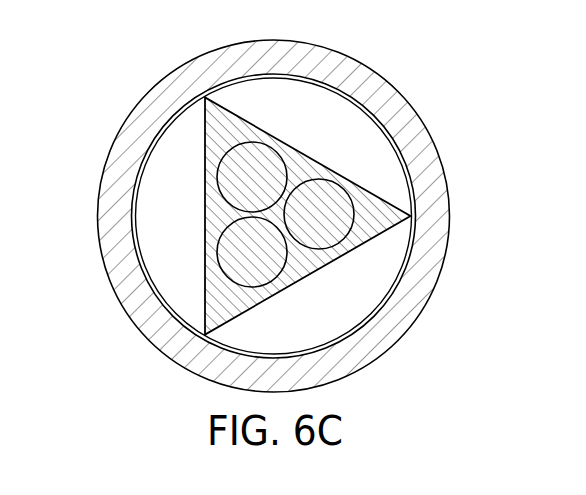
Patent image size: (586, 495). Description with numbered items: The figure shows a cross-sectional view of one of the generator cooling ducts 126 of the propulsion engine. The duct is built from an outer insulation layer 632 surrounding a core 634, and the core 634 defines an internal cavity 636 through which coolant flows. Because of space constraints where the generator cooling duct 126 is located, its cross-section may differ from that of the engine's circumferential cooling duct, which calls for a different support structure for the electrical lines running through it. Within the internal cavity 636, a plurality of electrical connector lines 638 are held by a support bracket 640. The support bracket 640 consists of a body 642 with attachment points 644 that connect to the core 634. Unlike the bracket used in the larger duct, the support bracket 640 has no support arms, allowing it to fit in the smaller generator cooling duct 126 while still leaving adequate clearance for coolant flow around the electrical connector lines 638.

The generator cooling duct 126 is at (245, 207).
The insulation layer 632 is at (381, 90).
The core 634 is at (402, 148).
The internal cavity 636 is at (234, 216).
The electrical connector lines 638 is at (322, 195).
The support bracket 640 is at (306, 262).
The body 642 is at (218, 212).
The attachment points 644 is at (196, 104).